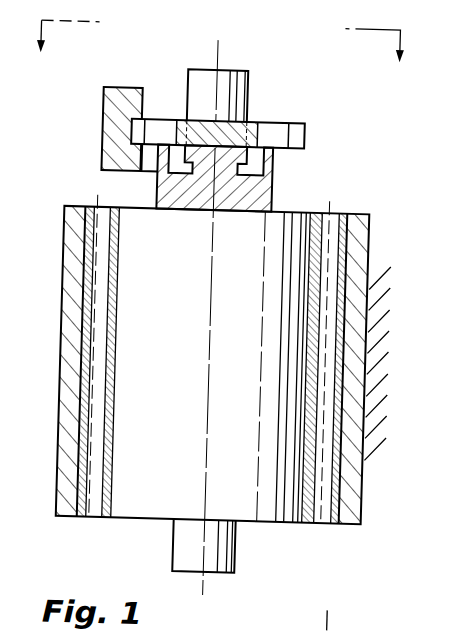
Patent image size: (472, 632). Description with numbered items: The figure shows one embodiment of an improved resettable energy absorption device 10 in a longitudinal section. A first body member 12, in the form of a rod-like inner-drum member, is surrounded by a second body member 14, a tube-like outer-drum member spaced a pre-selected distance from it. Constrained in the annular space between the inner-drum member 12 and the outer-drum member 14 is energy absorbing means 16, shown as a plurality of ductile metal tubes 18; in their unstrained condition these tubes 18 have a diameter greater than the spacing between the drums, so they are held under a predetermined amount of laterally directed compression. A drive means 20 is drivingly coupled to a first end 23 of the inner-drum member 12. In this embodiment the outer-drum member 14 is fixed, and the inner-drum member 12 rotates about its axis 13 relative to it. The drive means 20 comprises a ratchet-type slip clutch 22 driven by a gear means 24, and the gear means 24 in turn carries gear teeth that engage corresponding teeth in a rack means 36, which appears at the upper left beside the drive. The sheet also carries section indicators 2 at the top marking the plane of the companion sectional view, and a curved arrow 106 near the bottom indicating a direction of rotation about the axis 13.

The section line 2- 2 is at (219, 56).
The resettable energy absorption device 10 is at (357, 161).
The first body member 12 is at (285, 212).
The axis 13 is at (210, 42).
The second body member 14 is at (399, 220).
The energy absorbing means 16 is at (318, 520).
The ductile metal tubes 18 is at (88, 520).
The drive means 20 is at (274, 126).
The ratchet-type slip clutch 22 is at (273, 109).
The first end 23 is at (224, 72).
The gear means 24 is at (139, 120).
The rack means 36 is at (124, 91).
The rotation direction arrow 106 is at (306, 620).